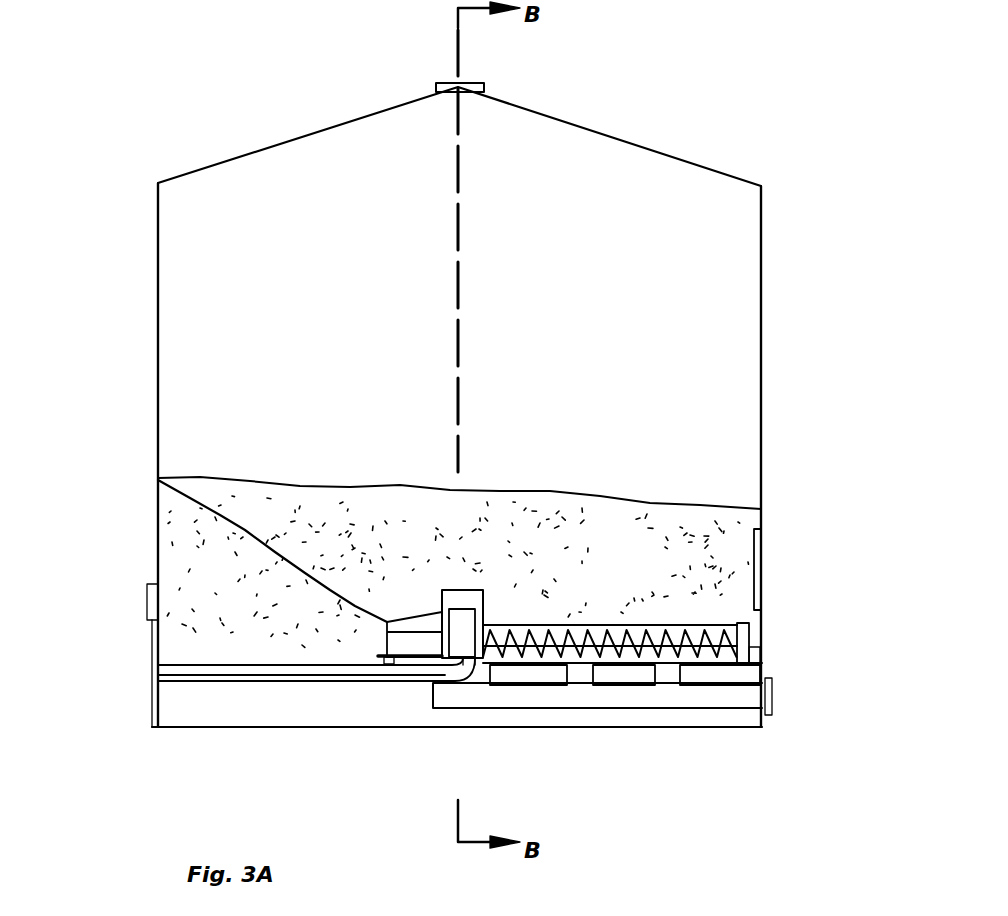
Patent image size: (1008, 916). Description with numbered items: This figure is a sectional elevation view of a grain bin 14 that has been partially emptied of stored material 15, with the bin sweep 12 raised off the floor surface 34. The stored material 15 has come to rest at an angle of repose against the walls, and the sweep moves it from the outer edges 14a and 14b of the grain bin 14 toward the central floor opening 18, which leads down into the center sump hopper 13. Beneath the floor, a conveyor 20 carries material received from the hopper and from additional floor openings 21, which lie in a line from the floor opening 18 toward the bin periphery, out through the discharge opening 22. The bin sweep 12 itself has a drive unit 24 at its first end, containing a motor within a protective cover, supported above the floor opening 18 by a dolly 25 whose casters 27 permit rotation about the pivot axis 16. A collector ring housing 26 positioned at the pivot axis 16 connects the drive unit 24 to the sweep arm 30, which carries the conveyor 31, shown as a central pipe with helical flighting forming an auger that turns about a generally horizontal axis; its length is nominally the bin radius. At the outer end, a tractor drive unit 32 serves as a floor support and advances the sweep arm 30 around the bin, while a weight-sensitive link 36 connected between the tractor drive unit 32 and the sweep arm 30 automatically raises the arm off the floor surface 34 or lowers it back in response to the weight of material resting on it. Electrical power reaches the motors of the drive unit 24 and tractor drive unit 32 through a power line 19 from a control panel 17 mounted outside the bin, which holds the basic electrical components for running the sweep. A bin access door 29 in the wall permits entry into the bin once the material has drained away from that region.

The bin sweep 12 is at (575, 582).
The center sump hopper 13 is at (450, 684).
The grain bin 14 is at (761, 313).
The outer edge of grain bin 14a is at (761, 509).
The outer edge of grain bin 14b is at (158, 478).
The stored material 15 is at (459, 562).
The pivot axis 16 is at (463, 660).
The control panel 17 is at (147, 600).
The floor opening 18 is at (470, 660).
The power line 19 is at (209, 681).
The conveyor 20 is at (620, 697).
The additional floor openings 21 is at (672, 752).
The discharge opening 22 is at (772, 697).
The drive unit 24 is at (410, 645).
The dolly 25 is at (378, 656).
The collector ring housing 26 is at (457, 600).
The casters 27 is at (387, 665).
The bin access door 29 is at (758, 546).
The sweep arm 30 is at (680, 626).
The conveyor 31 is at (702, 628).
The tractor drive unit 32 is at (784, 658).
The floor surface 34 is at (183, 665).
The weight-sensitive link 36 is at (755, 641).